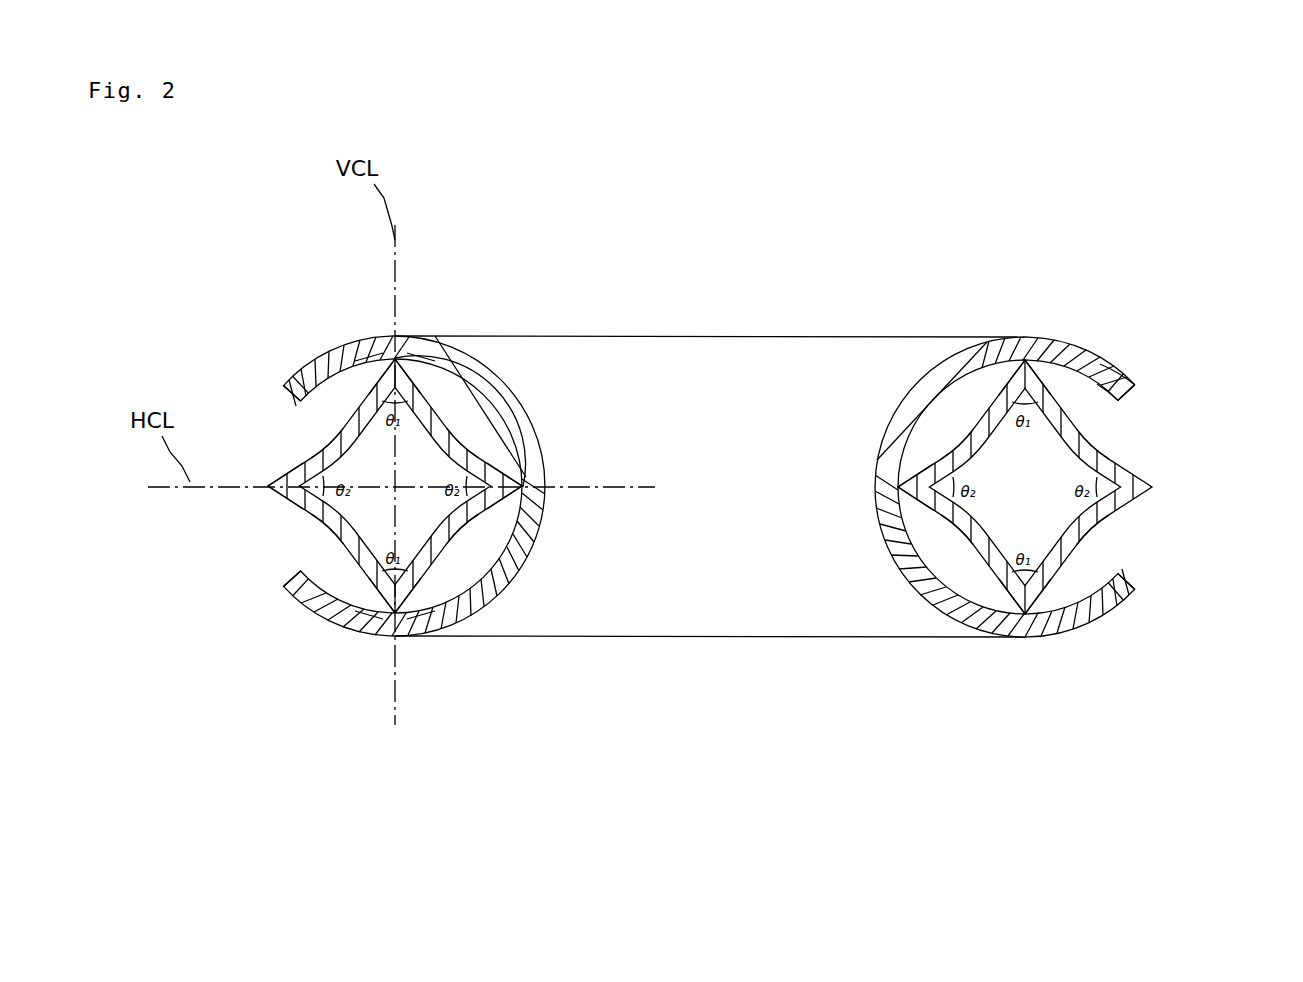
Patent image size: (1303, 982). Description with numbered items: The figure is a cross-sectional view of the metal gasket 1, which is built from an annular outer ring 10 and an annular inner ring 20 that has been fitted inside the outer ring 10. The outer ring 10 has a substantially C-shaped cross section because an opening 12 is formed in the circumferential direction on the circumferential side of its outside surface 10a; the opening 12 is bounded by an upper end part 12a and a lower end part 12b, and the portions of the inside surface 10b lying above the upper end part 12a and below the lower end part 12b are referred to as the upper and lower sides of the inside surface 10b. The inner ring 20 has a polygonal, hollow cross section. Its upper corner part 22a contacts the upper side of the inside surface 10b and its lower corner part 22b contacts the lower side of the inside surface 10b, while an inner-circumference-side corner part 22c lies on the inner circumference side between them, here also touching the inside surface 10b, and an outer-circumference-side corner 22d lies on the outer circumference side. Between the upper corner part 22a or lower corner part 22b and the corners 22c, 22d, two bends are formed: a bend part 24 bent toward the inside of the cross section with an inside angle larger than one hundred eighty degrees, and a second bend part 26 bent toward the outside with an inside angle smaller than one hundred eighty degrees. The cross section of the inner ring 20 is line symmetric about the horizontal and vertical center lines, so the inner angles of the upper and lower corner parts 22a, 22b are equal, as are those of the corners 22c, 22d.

The metal gasket 1 is at (1170, 208).
The outer ring 10 is at (711, 461).
The outside surface 10a is at (1143, 329).
The inside surface 10b is at (1171, 413).
The opening 12 is at (707, 485).
The upper end part 12a is at (1198, 399).
The lower end part 12b is at (1179, 619).
The inner ring 20 is at (727, 486).
The upper corner part 22a is at (710, 336).
The lower corner part 22b is at (710, 641).
The inner-circumference-side corner part 22c is at (710, 467).
The outer-circumference-side corner 22d is at (243, 505).
The bend part 24 is at (669, 489).
The second bend part 26 is at (391, 481).